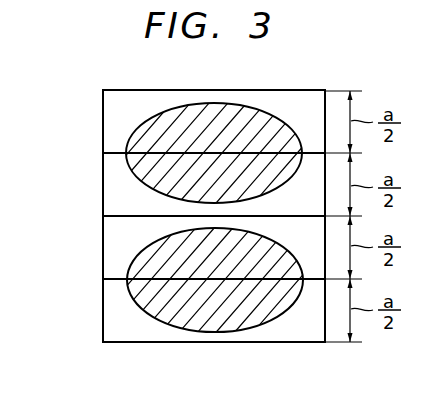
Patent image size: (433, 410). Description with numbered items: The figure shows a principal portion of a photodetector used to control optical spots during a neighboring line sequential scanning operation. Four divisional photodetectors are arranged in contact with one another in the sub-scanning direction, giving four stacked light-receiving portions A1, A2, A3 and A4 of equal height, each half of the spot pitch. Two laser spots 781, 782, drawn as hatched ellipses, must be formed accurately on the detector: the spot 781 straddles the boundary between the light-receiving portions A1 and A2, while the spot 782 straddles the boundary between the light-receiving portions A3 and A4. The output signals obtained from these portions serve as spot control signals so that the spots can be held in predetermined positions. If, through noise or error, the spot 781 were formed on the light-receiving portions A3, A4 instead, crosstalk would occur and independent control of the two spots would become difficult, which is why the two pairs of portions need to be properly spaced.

The laser spot 781 is at (255, 112).
The laser spot 782 is at (220, 332).
The light-receiving portion A1 is at (188, 121).
The light-receiving portion A2 is at (188, 184).
The light-receiving portion A3 is at (188, 247).
The light-receiving portion A4 is at (188, 310).